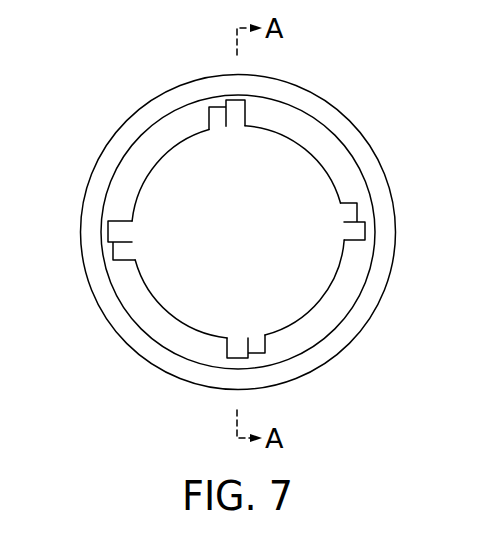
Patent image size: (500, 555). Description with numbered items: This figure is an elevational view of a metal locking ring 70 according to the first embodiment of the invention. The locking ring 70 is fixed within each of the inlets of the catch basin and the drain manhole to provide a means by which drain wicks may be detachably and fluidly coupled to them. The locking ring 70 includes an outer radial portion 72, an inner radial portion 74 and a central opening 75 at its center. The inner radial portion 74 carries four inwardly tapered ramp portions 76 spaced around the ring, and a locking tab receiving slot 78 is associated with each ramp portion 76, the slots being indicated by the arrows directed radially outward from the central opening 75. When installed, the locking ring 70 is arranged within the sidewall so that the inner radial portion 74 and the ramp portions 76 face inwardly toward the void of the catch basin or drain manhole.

The locking ring 70 is at (408, 121).
The outer radial portion 72 is at (396, 230).
The inner radial portion 74 is at (322, 148).
The central opening 75 is at (188, 316).
The ramp portion 76 is at (213, 118).
The locking tab receiving slot 78 is at (236, 136).